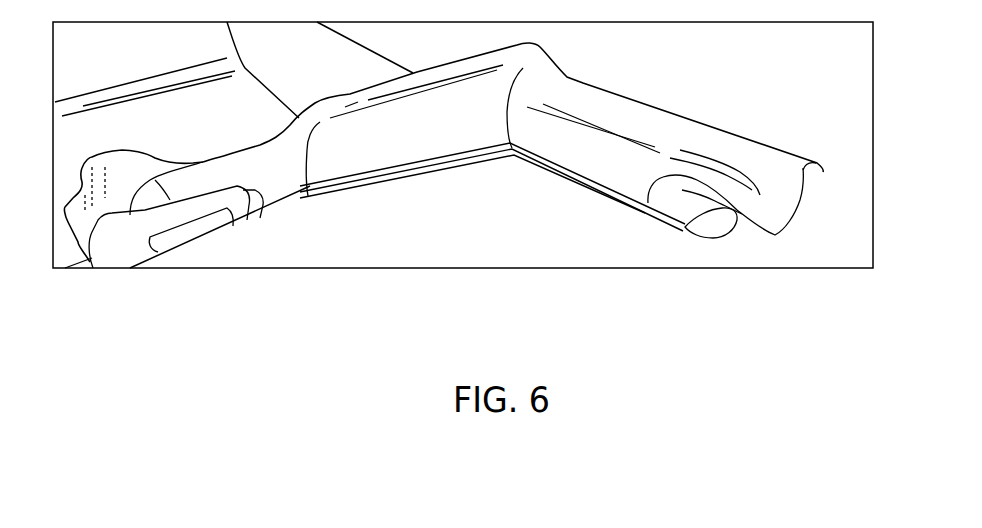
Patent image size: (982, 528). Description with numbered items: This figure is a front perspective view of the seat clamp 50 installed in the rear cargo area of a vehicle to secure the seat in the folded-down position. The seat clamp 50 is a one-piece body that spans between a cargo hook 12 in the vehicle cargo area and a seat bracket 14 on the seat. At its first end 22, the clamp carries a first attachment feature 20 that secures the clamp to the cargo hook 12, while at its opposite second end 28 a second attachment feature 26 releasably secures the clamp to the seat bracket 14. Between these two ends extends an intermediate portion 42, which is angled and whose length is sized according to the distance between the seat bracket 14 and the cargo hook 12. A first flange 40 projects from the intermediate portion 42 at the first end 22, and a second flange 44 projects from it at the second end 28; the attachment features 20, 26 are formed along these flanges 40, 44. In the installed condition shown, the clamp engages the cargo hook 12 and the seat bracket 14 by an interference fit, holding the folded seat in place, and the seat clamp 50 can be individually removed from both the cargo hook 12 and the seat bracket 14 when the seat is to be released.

The cargo hook 12 is at (147, 228).
The seat bracket 14 is at (823, 172).
The first attachment feature 20 is at (240, 212).
The first end 22 is at (140, 207).
The second attachment feature 26 is at (685, 228).
The second end 28 is at (783, 197).
The first flange 40 is at (282, 177).
The intermediate portion 42 is at (443, 130).
The second flange 44 is at (630, 178).
The seat clamp 50 is at (737, 212).